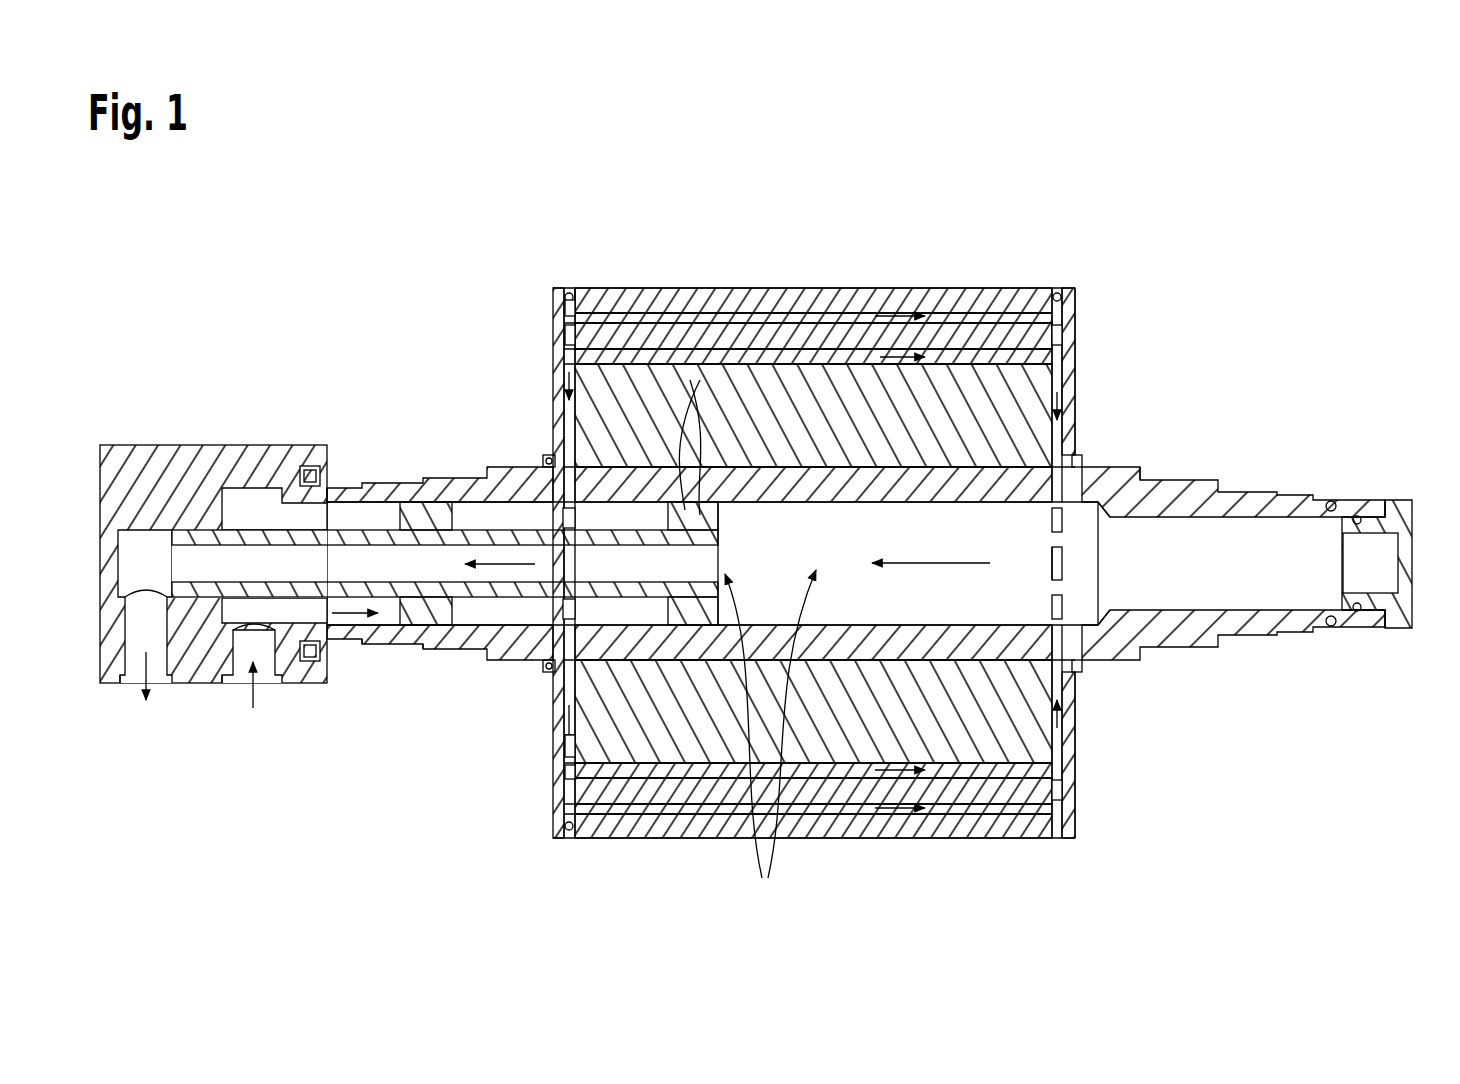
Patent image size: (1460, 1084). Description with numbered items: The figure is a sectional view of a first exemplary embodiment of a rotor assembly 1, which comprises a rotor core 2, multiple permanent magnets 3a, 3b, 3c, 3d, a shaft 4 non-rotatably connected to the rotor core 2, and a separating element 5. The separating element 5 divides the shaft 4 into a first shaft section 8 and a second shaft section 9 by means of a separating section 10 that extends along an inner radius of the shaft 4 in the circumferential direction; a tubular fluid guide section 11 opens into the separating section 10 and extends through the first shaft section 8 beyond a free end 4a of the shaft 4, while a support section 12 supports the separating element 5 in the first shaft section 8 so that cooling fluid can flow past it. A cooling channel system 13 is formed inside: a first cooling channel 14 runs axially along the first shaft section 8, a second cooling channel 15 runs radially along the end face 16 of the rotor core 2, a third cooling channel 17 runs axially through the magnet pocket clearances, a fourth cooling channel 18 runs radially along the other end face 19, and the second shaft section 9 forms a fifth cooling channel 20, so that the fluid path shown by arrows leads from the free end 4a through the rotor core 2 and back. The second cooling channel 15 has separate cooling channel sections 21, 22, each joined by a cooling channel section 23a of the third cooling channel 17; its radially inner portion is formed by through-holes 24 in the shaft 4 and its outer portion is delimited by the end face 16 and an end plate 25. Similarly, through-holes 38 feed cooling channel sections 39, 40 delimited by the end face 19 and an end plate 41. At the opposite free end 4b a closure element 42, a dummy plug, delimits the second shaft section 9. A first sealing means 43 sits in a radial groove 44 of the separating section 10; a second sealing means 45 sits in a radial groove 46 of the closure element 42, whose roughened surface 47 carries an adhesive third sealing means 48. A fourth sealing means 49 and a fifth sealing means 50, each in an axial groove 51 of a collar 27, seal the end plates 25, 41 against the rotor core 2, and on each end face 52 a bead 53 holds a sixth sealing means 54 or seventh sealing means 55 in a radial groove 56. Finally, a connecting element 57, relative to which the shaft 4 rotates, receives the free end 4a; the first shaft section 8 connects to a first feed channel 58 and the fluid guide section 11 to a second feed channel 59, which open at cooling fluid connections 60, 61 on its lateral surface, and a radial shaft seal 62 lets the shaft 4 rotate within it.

The rotor assembly 1 is at (1212, 202).
The rotor core 2 is at (930, 300).
The permanent magnet 3a is at (822, 358).
The permanent magnet 3b is at (1000, 810).
The permanent magnet 3c is at (776, 352).
The permanent magnet 3d is at (960, 772).
The shaft 4 is at (1241, 492).
The free end of the shaft 4a is at (343, 466).
The free end of the shaft 4b is at (1330, 390).
The separating element 5 is at (372, 485).
The first shaft section 8 is at (440, 650).
The second shaft section 9 is at (574, 735).
The separating section 10 is at (712, 525).
The fluid guide section 11 is at (470, 540).
The support section 12 is at (425, 512).
The cooling channel system 13 is at (437, 303).
The first cooling channel 14 is at (345, 647).
The second cooling channel 15 is at (560, 412).
The end face 16 is at (562, 772).
The third cooling channel 17 is at (884, 333).
The fourth cooling channel 18 is at (1058, 440).
The end face 19 is at (1078, 737).
The fifth cooling channel 20 is at (935, 565).
The cooling channel section 21 is at (560, 428).
The cooling channel section 22 is at (560, 745).
The cooling channel section 23a is at (1000, 356).
The through-hole 24 is at (542, 462).
The end plate 25 is at (562, 342).
The collar 27 is at (562, 297).
The through-hole 38 is at (1090, 475).
The cooling channel section 39 is at (1060, 382).
The cooling channel section 40 is at (1068, 700).
The end plate 41 is at (1076, 790).
The closure element 42 is at (1402, 500).
The first sealing means 43 is at (690, 380).
The radial groove 44 is at (700, 380).
The second sealing means 45 is at (1355, 516).
The radial groove 46 is at (1328, 500).
The surface 47 is at (1377, 500).
The third sealing means 48 is at (1376, 630).
The fourth sealing means 49 is at (590, 289).
The fifth sealing means 50 is at (1057, 290).
The axial groove 51 is at (568, 290).
The end face 52 is at (562, 808).
The bead 53 is at (542, 666).
The sixth sealing means 54 is at (552, 462).
The seventh sealing means 55 is at (1080, 460).
The radial groove 56 is at (556, 702).
The connecting element 57 is at (162, 443).
The first feed channel 58 is at (268, 688).
The second feed channel 59 is at (160, 686).
The cooling fluid connection 60 is at (238, 692).
The cooling fluid connection 61 is at (130, 692).
The radial shaft seal 62 is at (310, 464).